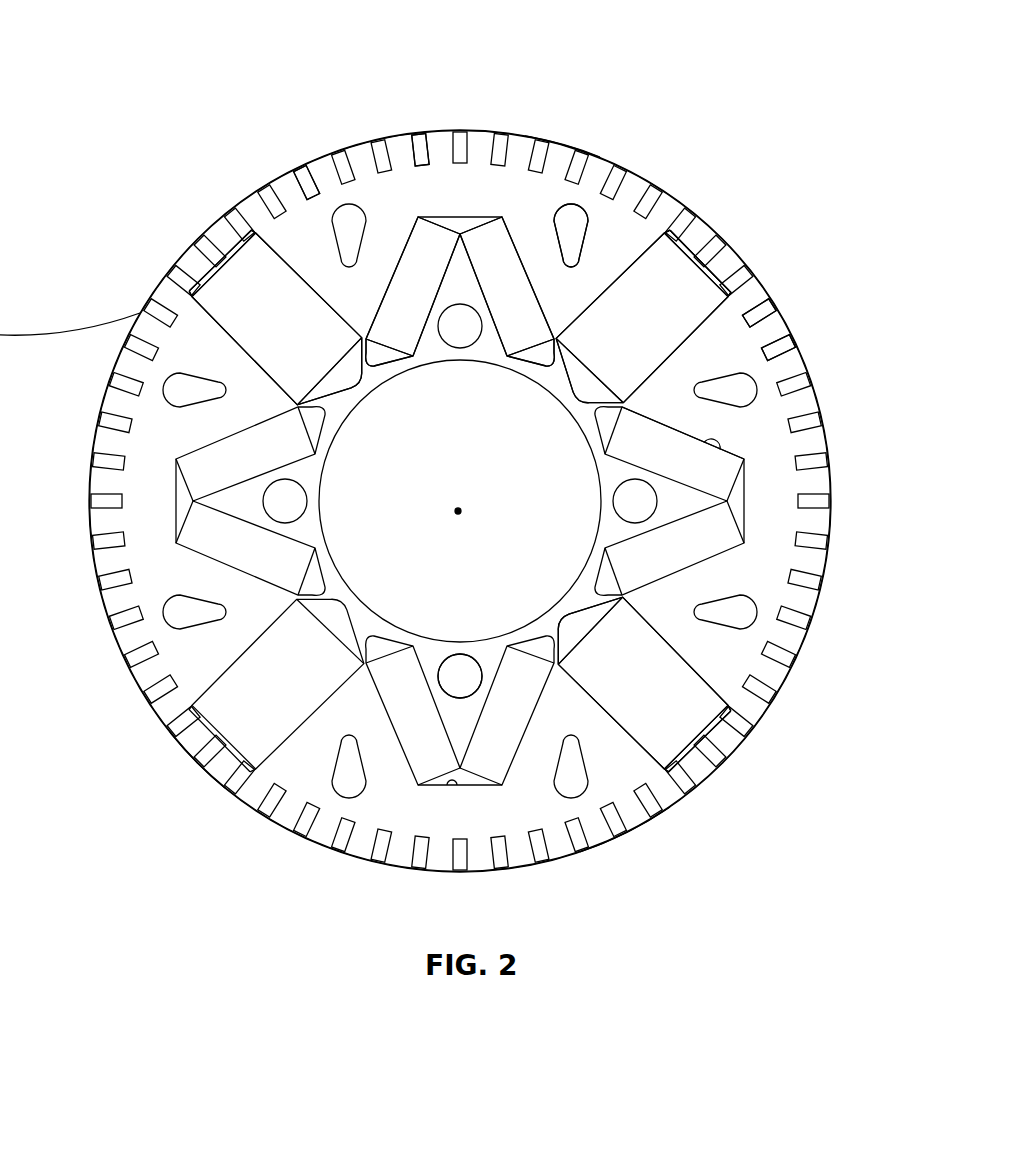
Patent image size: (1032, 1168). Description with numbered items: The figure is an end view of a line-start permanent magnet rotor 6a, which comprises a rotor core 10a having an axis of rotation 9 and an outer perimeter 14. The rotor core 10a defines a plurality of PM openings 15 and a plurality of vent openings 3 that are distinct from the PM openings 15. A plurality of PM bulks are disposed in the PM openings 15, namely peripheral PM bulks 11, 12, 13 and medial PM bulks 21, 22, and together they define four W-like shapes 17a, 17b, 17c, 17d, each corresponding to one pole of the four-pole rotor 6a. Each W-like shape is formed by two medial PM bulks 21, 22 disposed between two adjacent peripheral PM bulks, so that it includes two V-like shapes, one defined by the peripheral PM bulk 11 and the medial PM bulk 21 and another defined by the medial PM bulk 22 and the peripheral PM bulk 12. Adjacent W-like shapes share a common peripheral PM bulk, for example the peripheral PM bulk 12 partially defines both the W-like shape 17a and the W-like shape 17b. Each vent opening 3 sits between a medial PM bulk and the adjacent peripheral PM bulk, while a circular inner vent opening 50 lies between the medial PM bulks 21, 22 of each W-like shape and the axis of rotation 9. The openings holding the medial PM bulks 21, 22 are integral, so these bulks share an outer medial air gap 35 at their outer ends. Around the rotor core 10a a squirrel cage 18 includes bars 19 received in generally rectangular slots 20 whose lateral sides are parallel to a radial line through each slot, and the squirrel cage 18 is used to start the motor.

The vent opening 3 is at (585, 228).
The rotor 6a is at (637, 822).
The axis of rotation 9 is at (461, 513).
The rotor core 10a is at (732, 348).
The peripheral PM bulk 11 is at (260, 245).
The peripheral PM bulk 12 is at (673, 288).
The peripheral PM bulk 13 is at (690, 712).
The outer perimeter 14 is at (562, 143).
The PM opening 15 is at (630, 265).
The W-like shape 17a is at (503, 52).
The W-like shape 17b is at (867, 489).
The W-like shape 17c is at (530, 920).
The W-like shape 17d is at (86, 345).
The squirrel cage 18 is at (193, 216).
The bar 19 is at (303, 177).
The slot 20 is at (418, 148).
The medial PM bulk 21 is at (408, 250).
The medial PM bulk 22 is at (510, 237).
The outer medial air gap 35 is at (452, 783).
The inner vent opening 50 is at (456, 668).